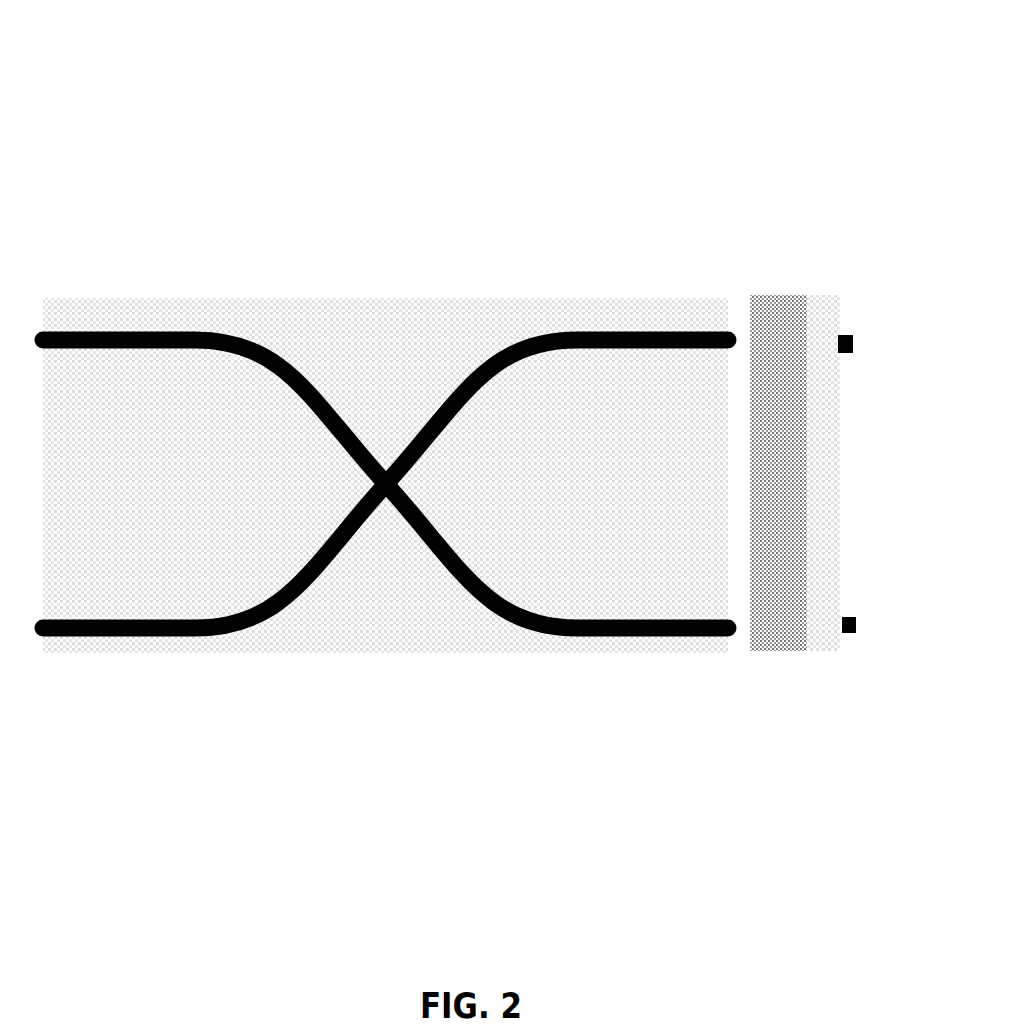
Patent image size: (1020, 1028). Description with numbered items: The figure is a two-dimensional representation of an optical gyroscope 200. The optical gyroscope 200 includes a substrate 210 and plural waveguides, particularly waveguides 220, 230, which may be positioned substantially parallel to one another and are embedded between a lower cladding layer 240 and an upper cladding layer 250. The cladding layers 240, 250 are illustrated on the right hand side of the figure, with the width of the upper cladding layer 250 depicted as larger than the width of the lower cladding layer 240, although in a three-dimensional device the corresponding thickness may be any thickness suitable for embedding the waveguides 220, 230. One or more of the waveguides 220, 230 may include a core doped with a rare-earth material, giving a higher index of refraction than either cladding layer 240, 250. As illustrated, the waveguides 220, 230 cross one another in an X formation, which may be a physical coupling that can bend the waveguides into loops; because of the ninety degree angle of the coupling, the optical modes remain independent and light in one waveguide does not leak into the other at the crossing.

The optical gyroscope 200 is at (245, 88).
The substrate 210 is at (385, 467).
The waveguide 220 is at (385, 484).
The waveguide 230 is at (385, 484).
The lower cladding layer 240 is at (739, 475).
The upper cladding layer 250 is at (803, 473).